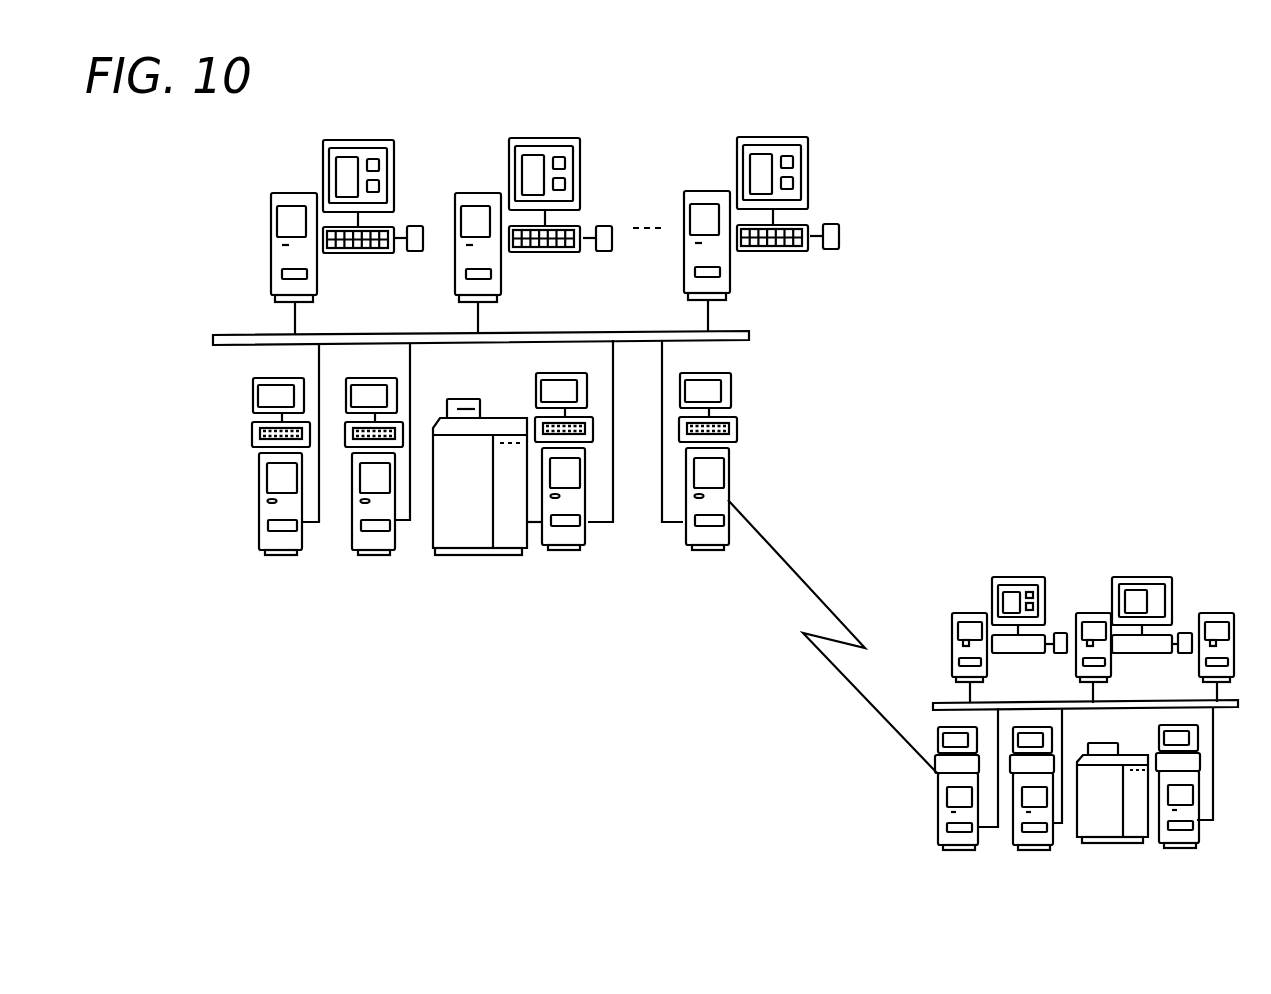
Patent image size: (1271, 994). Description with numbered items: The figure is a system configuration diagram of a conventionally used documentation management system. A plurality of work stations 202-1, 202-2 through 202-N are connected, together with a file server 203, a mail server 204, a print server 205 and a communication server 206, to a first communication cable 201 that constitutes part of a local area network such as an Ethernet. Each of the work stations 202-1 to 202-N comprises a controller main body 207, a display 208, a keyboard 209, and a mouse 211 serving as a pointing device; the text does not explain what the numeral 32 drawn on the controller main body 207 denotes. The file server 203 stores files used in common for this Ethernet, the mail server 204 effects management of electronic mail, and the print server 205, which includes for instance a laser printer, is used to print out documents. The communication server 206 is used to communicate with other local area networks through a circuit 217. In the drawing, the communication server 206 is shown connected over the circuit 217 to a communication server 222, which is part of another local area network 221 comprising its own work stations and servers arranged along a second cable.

The disk drive slot 32 is at (279, 274).
The first communication cable 201 is at (736, 331).
The work station 202-1 is at (344, 122).
The work station 202-2 is at (538, 124).
The work station 202-N is at (763, 124).
The file server 203 is at (287, 555).
The mail server 204 is at (378, 555).
The print server 205 is at (495, 555).
The communication server 206 is at (705, 549).
The controller main body 207 is at (271, 217).
The display 208 is at (388, 170).
The keyboard 209 is at (370, 253).
The mouse 211 is at (414, 226).
The circuit 217 is at (837, 615).
The another local area network 221 is at (1108, 565).
The communication server 222 is at (930, 848).